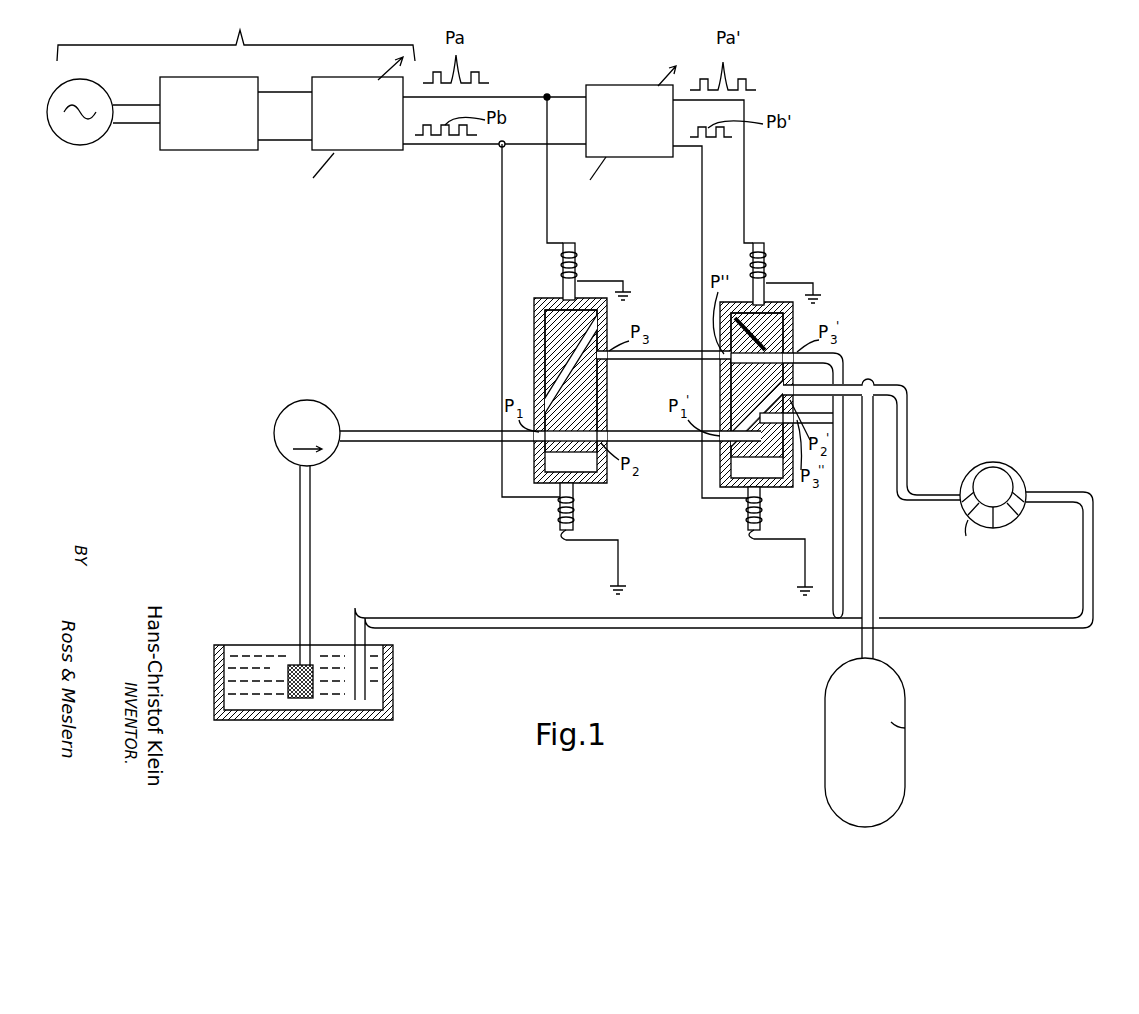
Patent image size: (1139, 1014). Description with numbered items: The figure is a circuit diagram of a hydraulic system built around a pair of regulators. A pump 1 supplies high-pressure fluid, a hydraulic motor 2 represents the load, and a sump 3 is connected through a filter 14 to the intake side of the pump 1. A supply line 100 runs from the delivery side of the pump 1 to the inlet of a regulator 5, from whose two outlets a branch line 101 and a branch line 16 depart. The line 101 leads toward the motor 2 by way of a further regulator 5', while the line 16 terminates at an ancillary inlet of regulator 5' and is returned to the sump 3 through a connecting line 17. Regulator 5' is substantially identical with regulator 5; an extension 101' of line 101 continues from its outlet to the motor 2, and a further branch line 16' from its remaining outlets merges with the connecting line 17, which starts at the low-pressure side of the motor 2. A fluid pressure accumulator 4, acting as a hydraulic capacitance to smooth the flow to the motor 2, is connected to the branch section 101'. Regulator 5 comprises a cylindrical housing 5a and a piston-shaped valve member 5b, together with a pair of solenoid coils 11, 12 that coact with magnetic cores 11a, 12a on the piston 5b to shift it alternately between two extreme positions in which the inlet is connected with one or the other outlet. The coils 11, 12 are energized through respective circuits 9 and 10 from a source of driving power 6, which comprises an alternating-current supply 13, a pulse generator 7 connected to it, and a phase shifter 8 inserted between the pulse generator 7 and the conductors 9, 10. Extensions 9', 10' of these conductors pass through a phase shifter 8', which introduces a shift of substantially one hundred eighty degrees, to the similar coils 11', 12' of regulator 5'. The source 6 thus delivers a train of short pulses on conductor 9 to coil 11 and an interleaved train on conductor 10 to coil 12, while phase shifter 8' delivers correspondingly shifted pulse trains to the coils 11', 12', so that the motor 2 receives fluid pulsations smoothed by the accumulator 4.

The pump 1 is at (303, 403).
The hydraulic motor 2 is at (1020, 472).
The sump 3 is at (303, 611).
The fluid pressure accumulator 4 is at (835, 778).
The regulator 5 is at (520, 370).
The further regulator 5' is at (788, 352).
The cylindrical housing 5a is at (535, 320).
The piston-shaped valve member 5b is at (545, 352).
The source of driving power 6 is at (236, 33).
The pulse generator 7 is at (210, 150).
The phase shifter 8 is at (357, 124).
The phase shifter 8' is at (631, 110).
The circuit 9 is at (567, 170).
The extension of conductor 9' is at (494, 78).
The circuit 10 is at (494, 164).
The extension of conductor 10' is at (540, 162).
The solenoid coil 11 is at (596, 271).
The solenoid coil 11' is at (785, 252).
The magnetic core 11a is at (576, 252).
The solenoid coil 12 is at (560, 538).
The solenoid coil 12' is at (780, 541).
The magnetic core 12a is at (575, 492).
The alternating-current supply 13 is at (82, 140).
The filter 14 is at (300, 700).
The branch line 16 is at (690, 373).
The further branch line 16' is at (855, 485).
The connecting line 17 is at (606, 625).
The supply line 100 is at (408, 428).
The branch line 101 is at (638, 456).
The extension of branch line 101' is at (871, 418).